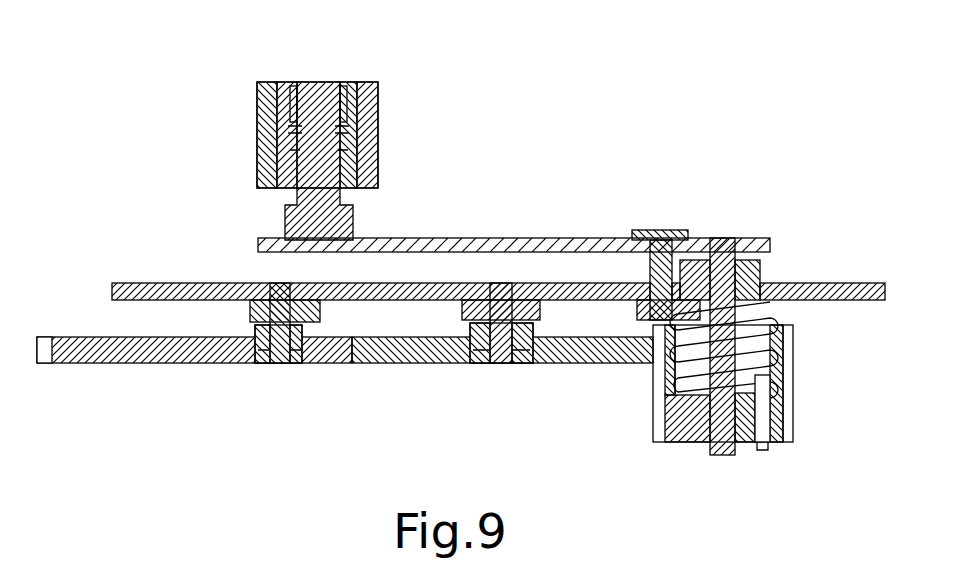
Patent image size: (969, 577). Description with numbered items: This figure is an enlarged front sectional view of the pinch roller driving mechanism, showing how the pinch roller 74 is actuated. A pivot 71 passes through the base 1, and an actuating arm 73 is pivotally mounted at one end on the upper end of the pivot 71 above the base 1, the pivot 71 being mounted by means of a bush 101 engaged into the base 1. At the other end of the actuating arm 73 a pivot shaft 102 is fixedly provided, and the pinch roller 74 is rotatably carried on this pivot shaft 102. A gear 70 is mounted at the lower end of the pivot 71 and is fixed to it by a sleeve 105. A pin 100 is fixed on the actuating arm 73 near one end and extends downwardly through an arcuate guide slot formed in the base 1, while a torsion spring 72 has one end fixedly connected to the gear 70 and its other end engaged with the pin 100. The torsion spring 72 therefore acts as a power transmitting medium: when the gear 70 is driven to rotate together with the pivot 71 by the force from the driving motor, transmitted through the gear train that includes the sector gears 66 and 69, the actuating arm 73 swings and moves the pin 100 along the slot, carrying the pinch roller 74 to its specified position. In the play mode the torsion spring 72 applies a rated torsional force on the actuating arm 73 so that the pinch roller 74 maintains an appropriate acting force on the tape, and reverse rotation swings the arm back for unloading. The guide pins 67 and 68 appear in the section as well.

The base 1 is at (210, 283).
The sector gear 66 is at (162, 364).
The guide pin 67 is at (228, 364).
The guide pin 68 is at (490, 364).
The sector gear 69 is at (425, 364).
The gear 70 is at (678, 447).
The pivot 71 is at (712, 238).
The torsion spring 72 is at (648, 321).
The actuating arm 73 is at (430, 239).
The pinch roller 74 is at (368, 100).
The pin 100 is at (645, 232).
The bush 101 is at (761, 268).
The pivot shaft 102 is at (290, 222).
The sleeve 105 is at (697, 447).